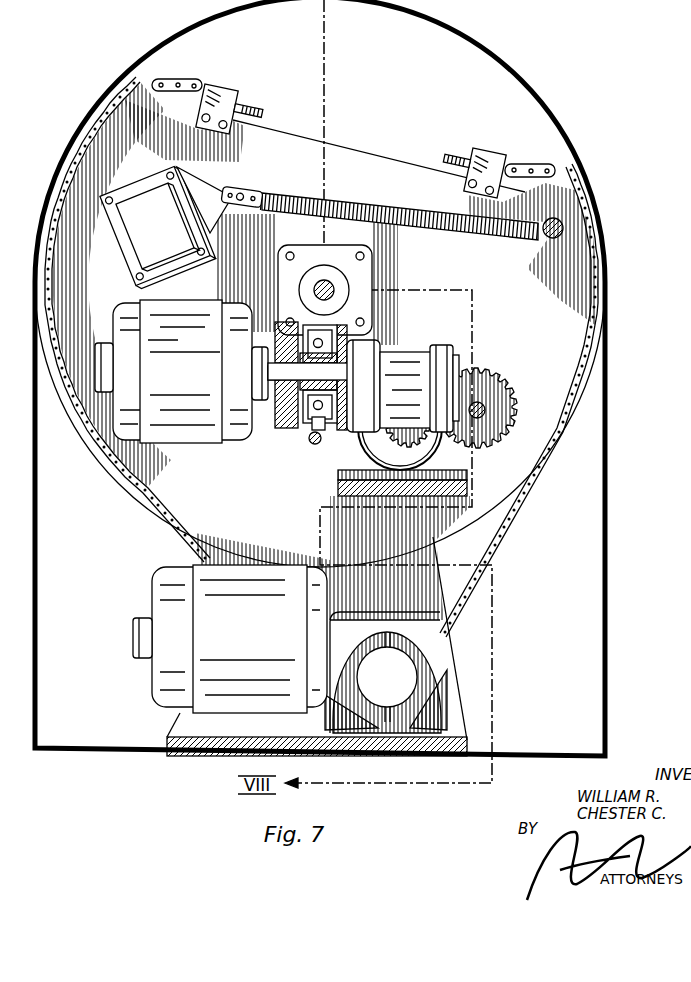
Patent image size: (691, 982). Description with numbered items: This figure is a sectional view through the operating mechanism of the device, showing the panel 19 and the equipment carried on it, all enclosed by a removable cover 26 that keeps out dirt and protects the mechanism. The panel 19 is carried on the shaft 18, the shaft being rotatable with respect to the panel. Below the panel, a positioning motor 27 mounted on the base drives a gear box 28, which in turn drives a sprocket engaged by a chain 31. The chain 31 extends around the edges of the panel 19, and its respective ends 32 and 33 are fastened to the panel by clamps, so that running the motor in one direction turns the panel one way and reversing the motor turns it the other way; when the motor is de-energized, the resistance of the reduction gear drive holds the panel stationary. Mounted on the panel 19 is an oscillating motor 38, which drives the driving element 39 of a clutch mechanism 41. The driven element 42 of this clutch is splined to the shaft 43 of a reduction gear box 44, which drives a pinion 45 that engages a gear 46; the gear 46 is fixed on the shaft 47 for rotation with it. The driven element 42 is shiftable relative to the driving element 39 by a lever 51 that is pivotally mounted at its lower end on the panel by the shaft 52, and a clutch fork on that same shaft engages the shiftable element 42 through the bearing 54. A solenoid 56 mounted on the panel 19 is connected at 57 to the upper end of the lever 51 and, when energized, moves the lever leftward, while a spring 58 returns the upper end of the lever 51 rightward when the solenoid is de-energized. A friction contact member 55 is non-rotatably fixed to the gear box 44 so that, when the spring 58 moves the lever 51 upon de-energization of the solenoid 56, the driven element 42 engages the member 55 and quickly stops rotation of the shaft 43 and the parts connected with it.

The shaft 18 is at (320, 285).
The panel 19 is at (345, 142).
The removable cover 26 is at (609, 340).
The positioning motor 27 is at (160, 590).
The gear box 28 is at (420, 650).
The chain 31 is at (528, 492).
The end of chain 32 is at (250, 102).
The end of chain 33 is at (452, 152).
The oscillating motor 38 is at (157, 442).
The driving element 39 is at (287, 427).
The clutch mechanism 41 is at (297, 433).
The driven element 42 is at (328, 430).
The shaft 43 is at (344, 375).
The reduction gear box 44 is at (437, 347).
The pinion 45 is at (422, 432).
The gear 46 is at (487, 370).
The shaft 47 is at (486, 406).
The lever 51 is at (246, 192).
The shaft 52 is at (313, 443).
The bearing 54 is at (313, 413).
The friction contact member 55 is at (333, 430).
The solenoid 56 is at (167, 174).
The connection 57 is at (230, 190).
The spring 58 is at (382, 203).